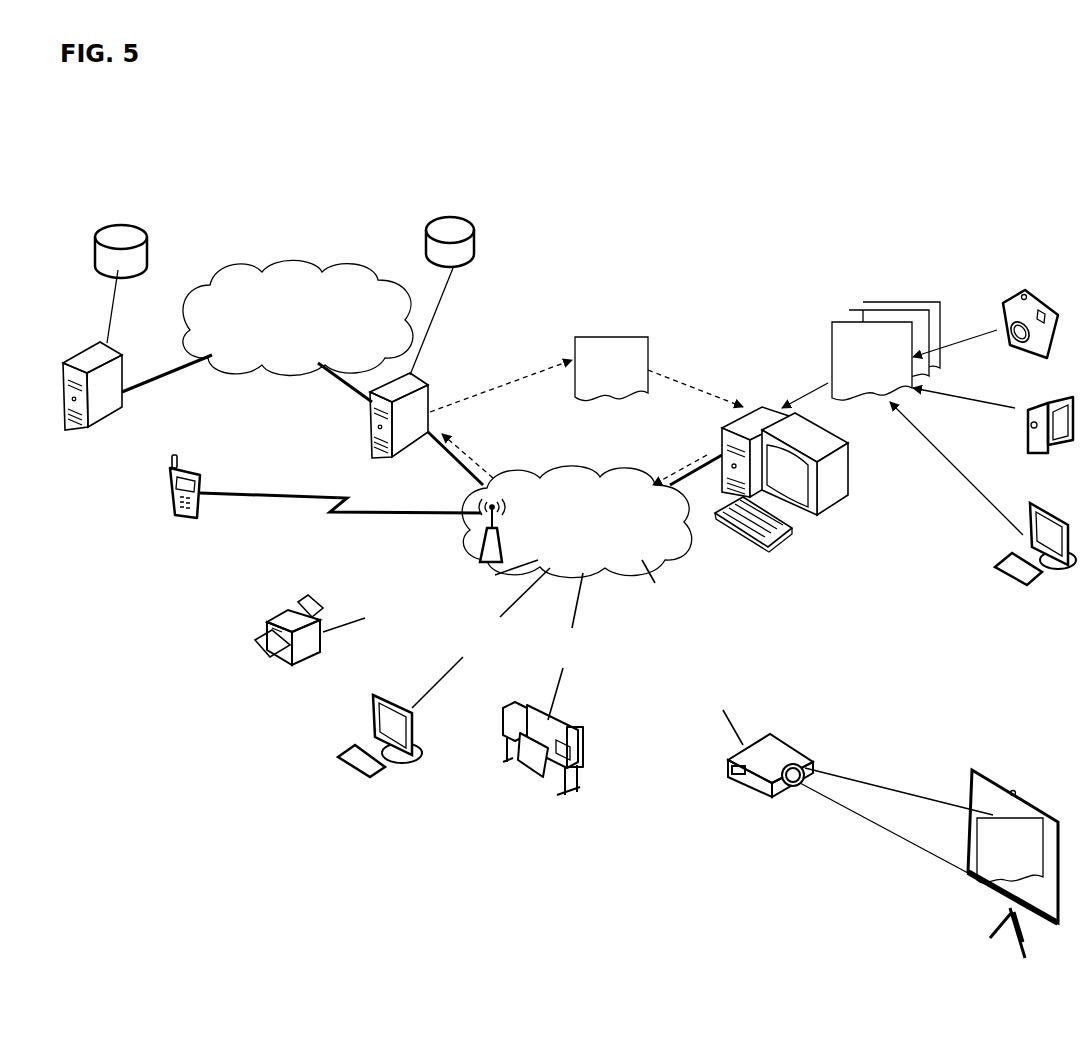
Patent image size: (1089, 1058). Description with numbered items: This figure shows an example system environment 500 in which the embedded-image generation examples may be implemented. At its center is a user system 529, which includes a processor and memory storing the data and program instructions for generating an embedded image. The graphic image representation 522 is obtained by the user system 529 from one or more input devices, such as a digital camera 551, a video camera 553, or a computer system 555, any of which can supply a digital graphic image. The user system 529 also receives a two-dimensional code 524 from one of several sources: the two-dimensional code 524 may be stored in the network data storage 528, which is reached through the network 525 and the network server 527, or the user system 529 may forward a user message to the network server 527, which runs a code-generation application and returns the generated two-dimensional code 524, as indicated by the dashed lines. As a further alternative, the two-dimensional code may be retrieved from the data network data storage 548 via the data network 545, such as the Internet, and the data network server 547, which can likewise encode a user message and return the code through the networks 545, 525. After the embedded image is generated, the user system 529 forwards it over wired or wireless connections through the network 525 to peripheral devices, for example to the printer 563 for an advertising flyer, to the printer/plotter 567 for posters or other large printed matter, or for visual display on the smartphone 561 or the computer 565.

The system environment 500 is at (126, 121).
The data network data storage 548 is at (138, 284).
The data network server 547 is at (137, 386).
The data network 545 is at (298, 317).
The network data storage 528 is at (460, 296).
The network server 527 is at (400, 424).
The 2D code 524 is at (612, 336).
The graphic image representation 522 is at (863, 302).
The user system 529 is at (762, 479).
The digital camera 551 is at (985, 336).
The video camera 553 is at (993, 433).
The computer system 555 is at (983, 511).
The network 525 is at (577, 522).
The smartphone 561 is at (322, 499).
The printer 563 is at (396, 628).
The computer 565 is at (444, 683).
The printer/plotter 567 is at (554, 697).